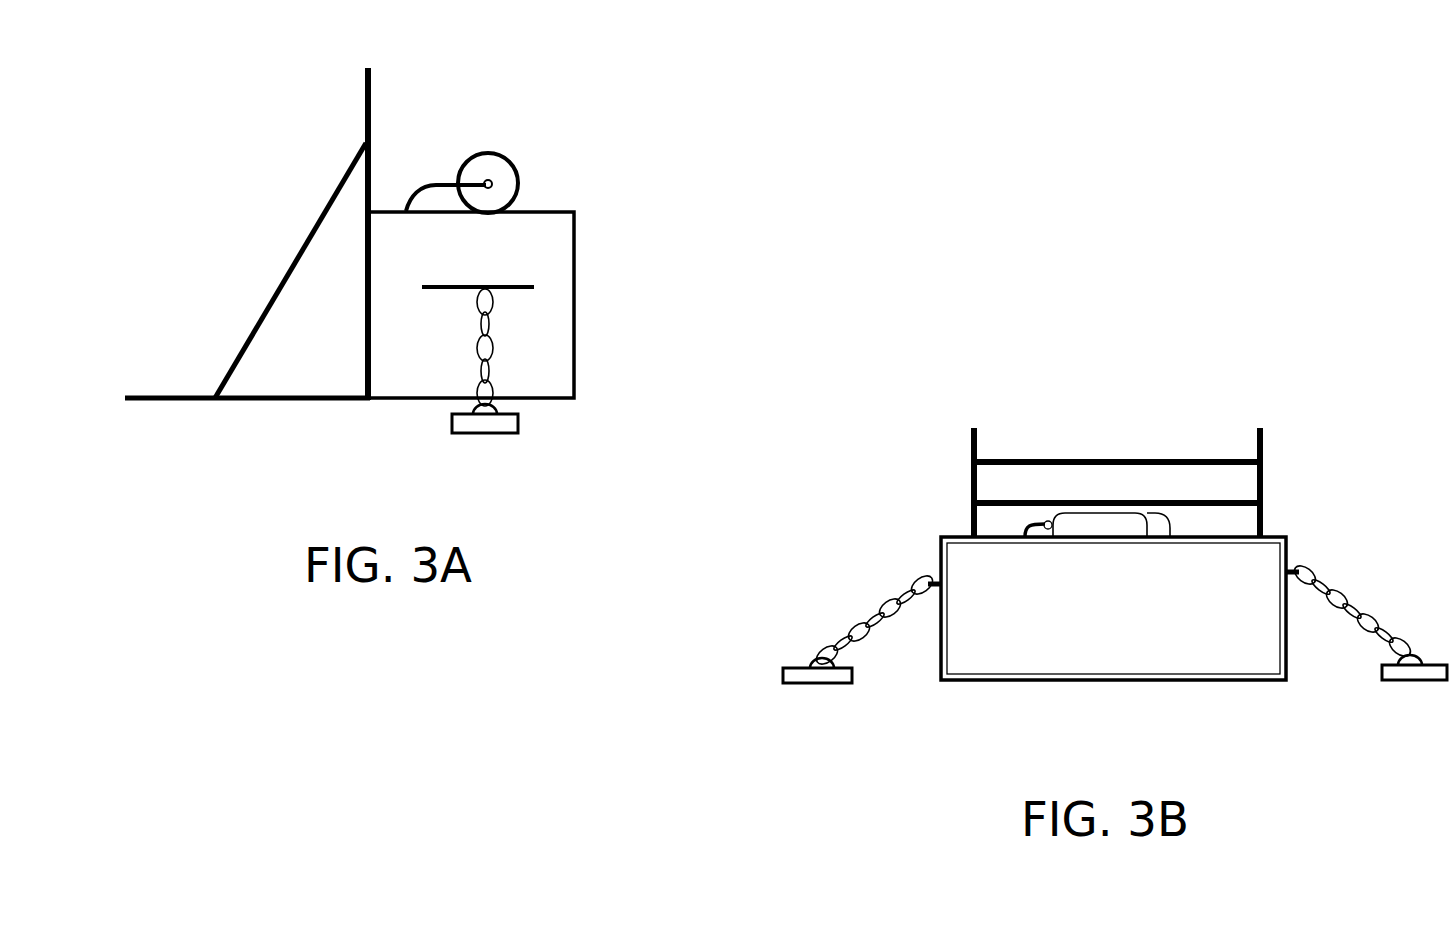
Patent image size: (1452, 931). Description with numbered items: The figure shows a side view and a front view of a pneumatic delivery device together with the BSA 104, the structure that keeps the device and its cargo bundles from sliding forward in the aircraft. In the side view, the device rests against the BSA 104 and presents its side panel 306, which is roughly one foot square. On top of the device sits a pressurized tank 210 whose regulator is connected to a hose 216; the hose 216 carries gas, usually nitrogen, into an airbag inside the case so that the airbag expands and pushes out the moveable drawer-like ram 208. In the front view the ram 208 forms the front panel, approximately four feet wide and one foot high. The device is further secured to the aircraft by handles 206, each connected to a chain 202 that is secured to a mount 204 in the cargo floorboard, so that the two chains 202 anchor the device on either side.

In FIG. 3A, the BSA 104 is at (262, 225).
In FIG. 3B, the BSA 104 is at (1118, 450).
In FIG. 3A, the chain 202 is at (493, 340).
In FIG. 3B, the chain 202 is at (1362, 610).
In FIG. 3A, the mount 204 is at (475, 428).
In FIG. 3B, the mount 204 is at (1413, 681).
In FIG. 3A, the handle 206 is at (537, 287).
In FIG. 3B, the handle 206 is at (1293, 565).
In FIG. 3B, the ram 208 is at (1042, 647).
In FIG. 3A, the pressurized tank 210 is at (522, 180).
In FIG. 3B, the pressurized tank 210 is at (1103, 527).
In FIG. 3A, the hose 216 is at (433, 186).
In FIG. 3A, the side panel 306 is at (512, 247).